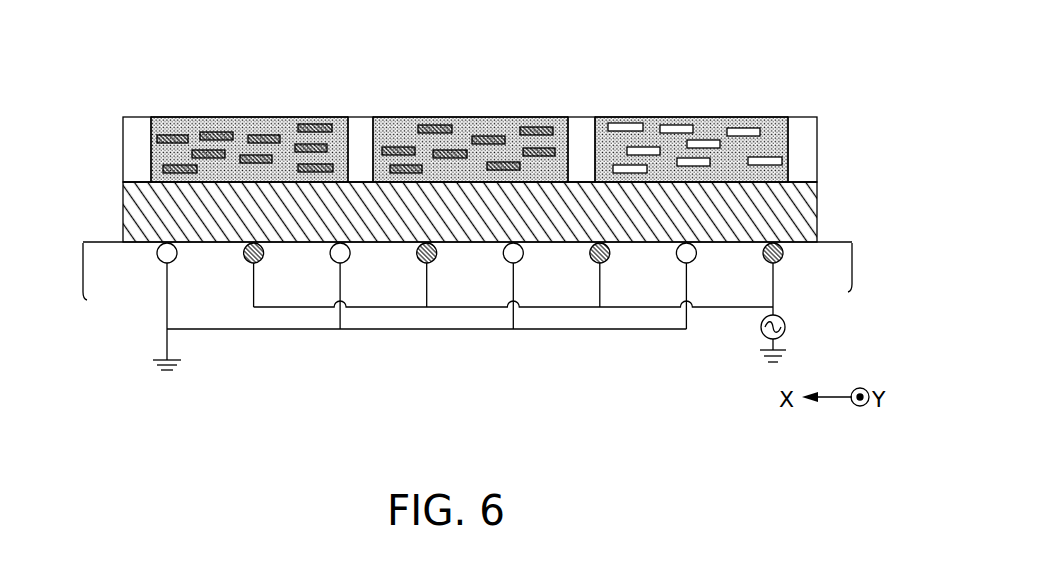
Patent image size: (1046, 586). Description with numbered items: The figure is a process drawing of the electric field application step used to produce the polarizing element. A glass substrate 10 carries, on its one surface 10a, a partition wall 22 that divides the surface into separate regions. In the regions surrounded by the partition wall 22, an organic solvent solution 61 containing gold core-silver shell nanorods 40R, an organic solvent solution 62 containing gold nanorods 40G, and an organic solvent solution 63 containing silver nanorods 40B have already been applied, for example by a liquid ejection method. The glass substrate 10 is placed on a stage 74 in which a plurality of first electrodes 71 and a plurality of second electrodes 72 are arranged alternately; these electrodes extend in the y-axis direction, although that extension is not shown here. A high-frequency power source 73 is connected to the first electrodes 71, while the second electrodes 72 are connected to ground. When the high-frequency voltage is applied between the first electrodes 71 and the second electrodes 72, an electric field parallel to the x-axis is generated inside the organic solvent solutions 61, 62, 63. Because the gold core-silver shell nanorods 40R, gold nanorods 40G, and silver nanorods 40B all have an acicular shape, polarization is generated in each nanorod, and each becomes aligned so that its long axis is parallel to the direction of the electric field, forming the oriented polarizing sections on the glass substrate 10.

The glass substrate 10 is at (817, 207).
The one surface of the glass substrate 10a is at (123, 170).
The partition wall 22 is at (141, 117).
The gold core-silver shell nanorods 40R is at (217, 118).
The gold nanorods 40G is at (437, 117).
The silver nanorods 40B is at (627, 115).
The organic solvent solution 61 is at (281, 107).
The organic solvent solution 62 is at (506, 106).
The organic solvent solution 63 is at (741, 106).
The first electrodes 71 is at (782, 250).
The second electrodes 72 is at (156, 255).
The high-frequency power source 73 is at (785, 340).
The stage 74 is at (110, 243).